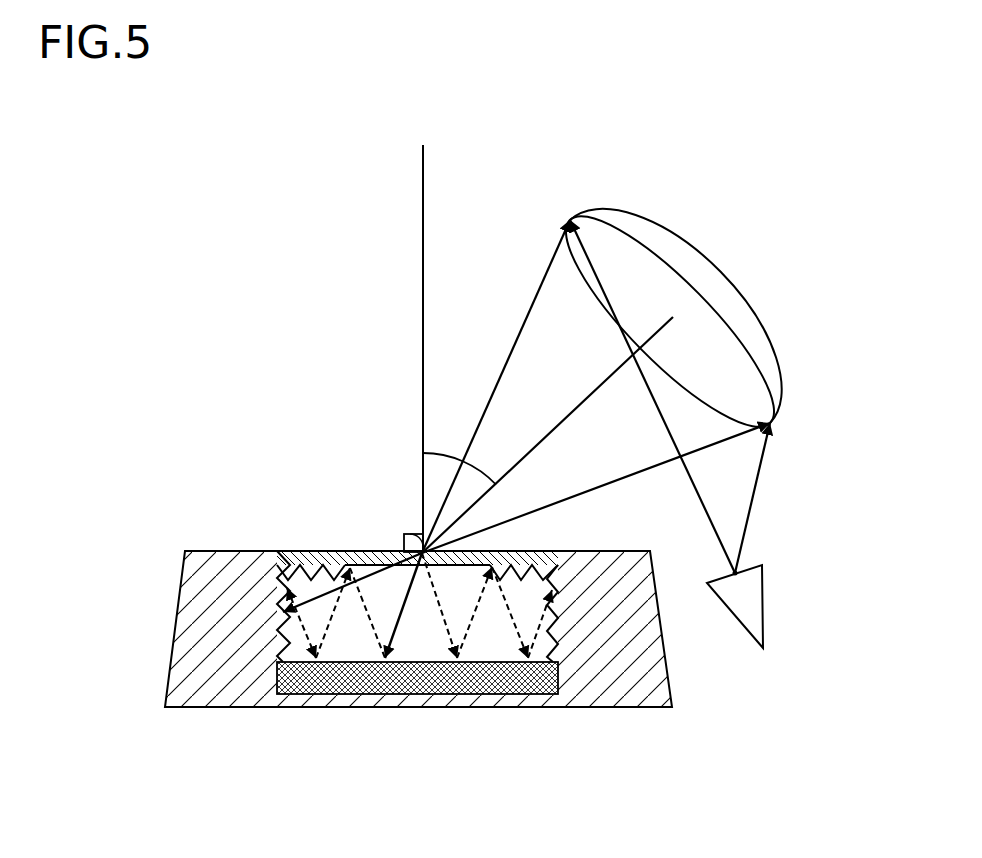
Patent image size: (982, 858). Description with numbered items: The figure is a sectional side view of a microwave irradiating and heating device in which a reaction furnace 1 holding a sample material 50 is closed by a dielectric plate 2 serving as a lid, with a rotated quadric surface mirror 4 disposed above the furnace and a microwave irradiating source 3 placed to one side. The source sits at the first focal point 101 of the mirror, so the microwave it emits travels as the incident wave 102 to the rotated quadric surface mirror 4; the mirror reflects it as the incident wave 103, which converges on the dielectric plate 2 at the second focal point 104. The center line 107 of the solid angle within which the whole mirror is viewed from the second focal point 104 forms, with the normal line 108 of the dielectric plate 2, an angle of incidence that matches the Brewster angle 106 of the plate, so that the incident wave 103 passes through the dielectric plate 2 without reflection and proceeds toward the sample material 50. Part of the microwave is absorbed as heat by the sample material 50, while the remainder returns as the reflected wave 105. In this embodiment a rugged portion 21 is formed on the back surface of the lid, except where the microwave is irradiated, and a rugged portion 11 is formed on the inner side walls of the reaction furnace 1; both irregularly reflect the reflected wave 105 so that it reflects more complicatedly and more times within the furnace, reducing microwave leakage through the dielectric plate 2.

The reaction furnace 1 is at (190, 618).
The dielectric plate 2 is at (367, 551).
The microwave irradiating source 3 is at (766, 603).
The rotated quadric surface mirror 4 is at (705, 252).
The rugged portion 11 is at (282, 615).
The rugged portion 21 is at (308, 565).
The sample material 50 is at (404, 683).
The first focal point 101 is at (740, 568).
The incident wave 102 is at (758, 482).
The incident wave 103 is at (539, 290).
The second focal point 104 is at (404, 540).
The reflected wave 105 is at (368, 617).
The Brewster angle 106 is at (449, 455).
The center line 107 is at (583, 402).
The normal line 108 is at (423, 202).